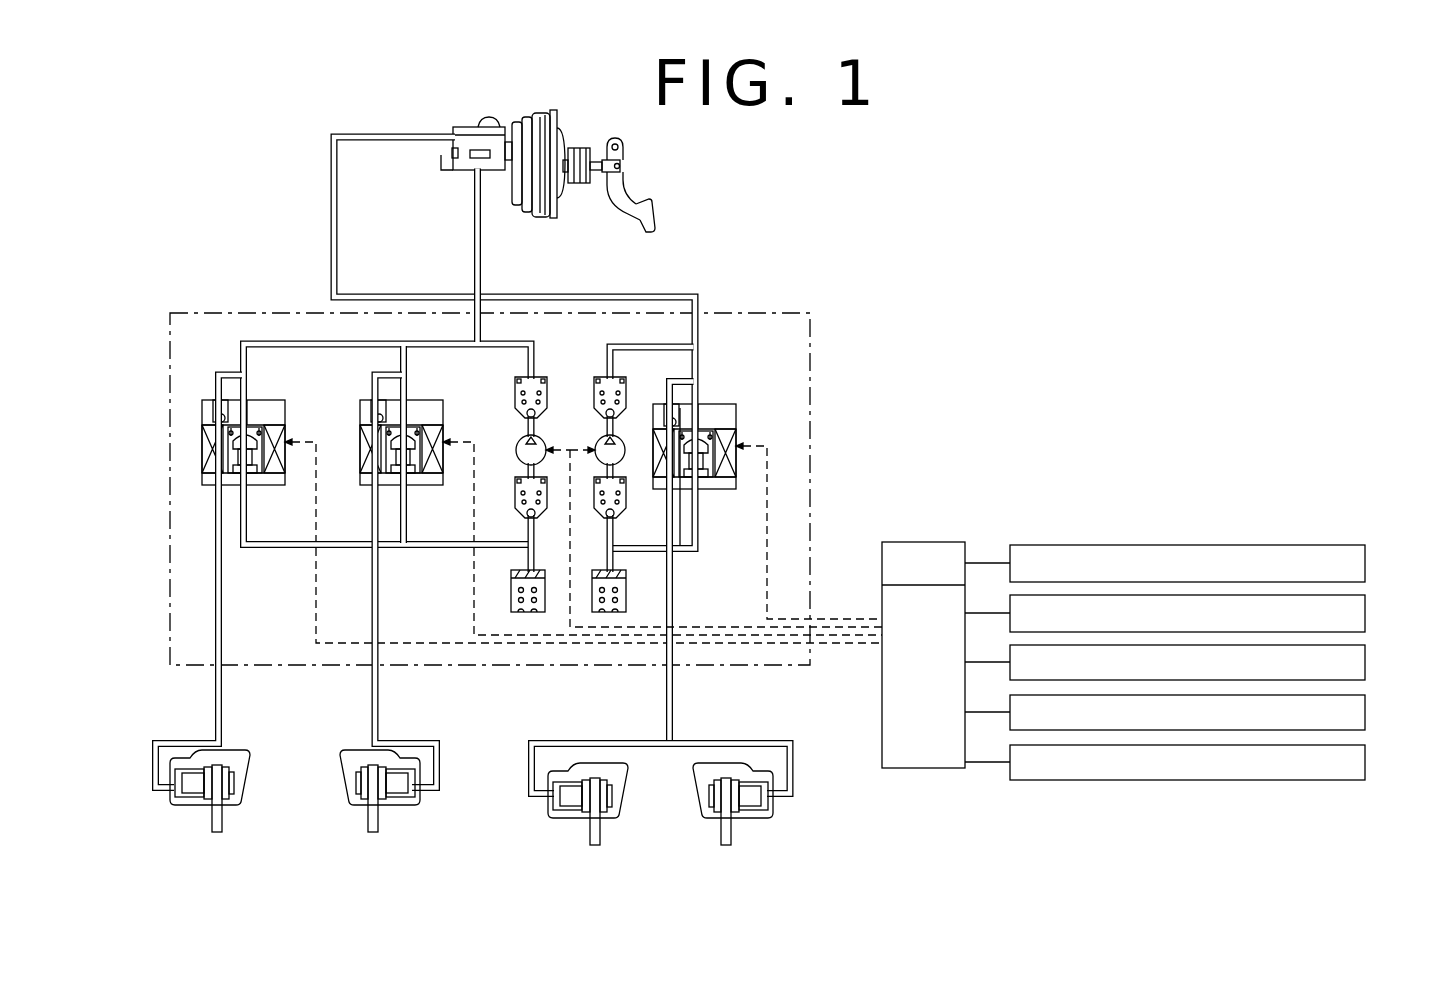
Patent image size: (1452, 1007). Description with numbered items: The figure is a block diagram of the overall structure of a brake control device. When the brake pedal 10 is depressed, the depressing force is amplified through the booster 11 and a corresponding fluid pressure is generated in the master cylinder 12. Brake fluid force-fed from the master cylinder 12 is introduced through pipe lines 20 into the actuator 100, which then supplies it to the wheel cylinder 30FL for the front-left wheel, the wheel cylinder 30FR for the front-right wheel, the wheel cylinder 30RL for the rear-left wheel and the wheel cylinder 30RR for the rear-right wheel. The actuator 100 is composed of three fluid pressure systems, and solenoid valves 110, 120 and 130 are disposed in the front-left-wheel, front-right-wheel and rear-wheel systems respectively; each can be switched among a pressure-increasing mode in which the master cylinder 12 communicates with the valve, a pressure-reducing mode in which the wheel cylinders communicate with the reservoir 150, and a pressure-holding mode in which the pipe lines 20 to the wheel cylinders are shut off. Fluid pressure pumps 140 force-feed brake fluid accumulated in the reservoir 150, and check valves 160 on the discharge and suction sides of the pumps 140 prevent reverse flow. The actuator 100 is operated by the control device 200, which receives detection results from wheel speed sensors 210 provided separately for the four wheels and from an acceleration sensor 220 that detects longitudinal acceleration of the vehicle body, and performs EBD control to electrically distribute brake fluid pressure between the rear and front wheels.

The brake pedal 10 is at (653, 200).
The booster 11 is at (528, 217).
The master cylinder 12 is at (463, 172).
The pipe lines 20 is at (473, 253).
The wheel cylinder 30FL is at (206, 818).
The wheel cylinder 30FR is at (380, 818).
The wheel cylinder 30RL is at (579, 826).
The wheel cylinder 30RR is at (736, 826).
The actuator 100 is at (813, 311).
The solenoid valve 110 is at (274, 388).
The solenoid valve 120 is at (426, 388).
The solenoid valve 130 is at (719, 401).
The fluid pressure pumps 140 is at (592, 432).
The reservoir 150 is at (512, 582).
The check valves 160 is at (625, 378).
The control device 200 is at (928, 542).
The wheel speed sensors 210 is at (1368, 548).
The acceleration sensor 220 is at (1366, 767).